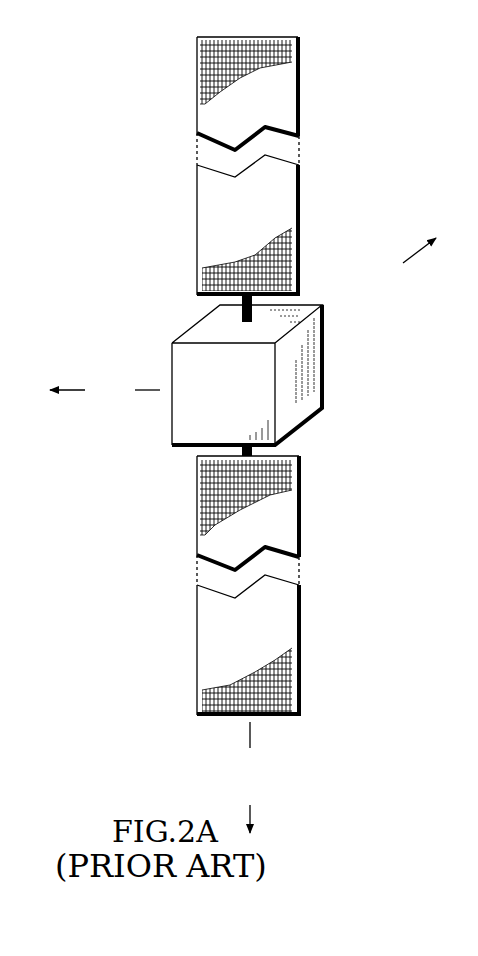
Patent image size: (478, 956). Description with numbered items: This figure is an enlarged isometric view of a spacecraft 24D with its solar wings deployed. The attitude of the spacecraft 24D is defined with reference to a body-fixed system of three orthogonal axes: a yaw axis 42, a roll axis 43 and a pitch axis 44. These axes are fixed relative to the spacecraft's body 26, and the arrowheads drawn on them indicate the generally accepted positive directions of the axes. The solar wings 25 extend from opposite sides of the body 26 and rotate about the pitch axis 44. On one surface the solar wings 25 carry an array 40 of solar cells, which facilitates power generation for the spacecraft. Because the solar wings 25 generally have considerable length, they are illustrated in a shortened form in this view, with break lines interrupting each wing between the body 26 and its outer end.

The spacecraft 24D is at (176, 298).
The solar wings 25 is at (271, 372).
The array of solar cells 40 is at (228, 109).
The body 26 is at (305, 372).
The yaw axis 42 is at (105, 394).
The roll axis 43 is at (333, 320).
The pitch axis 44 is at (252, 777).